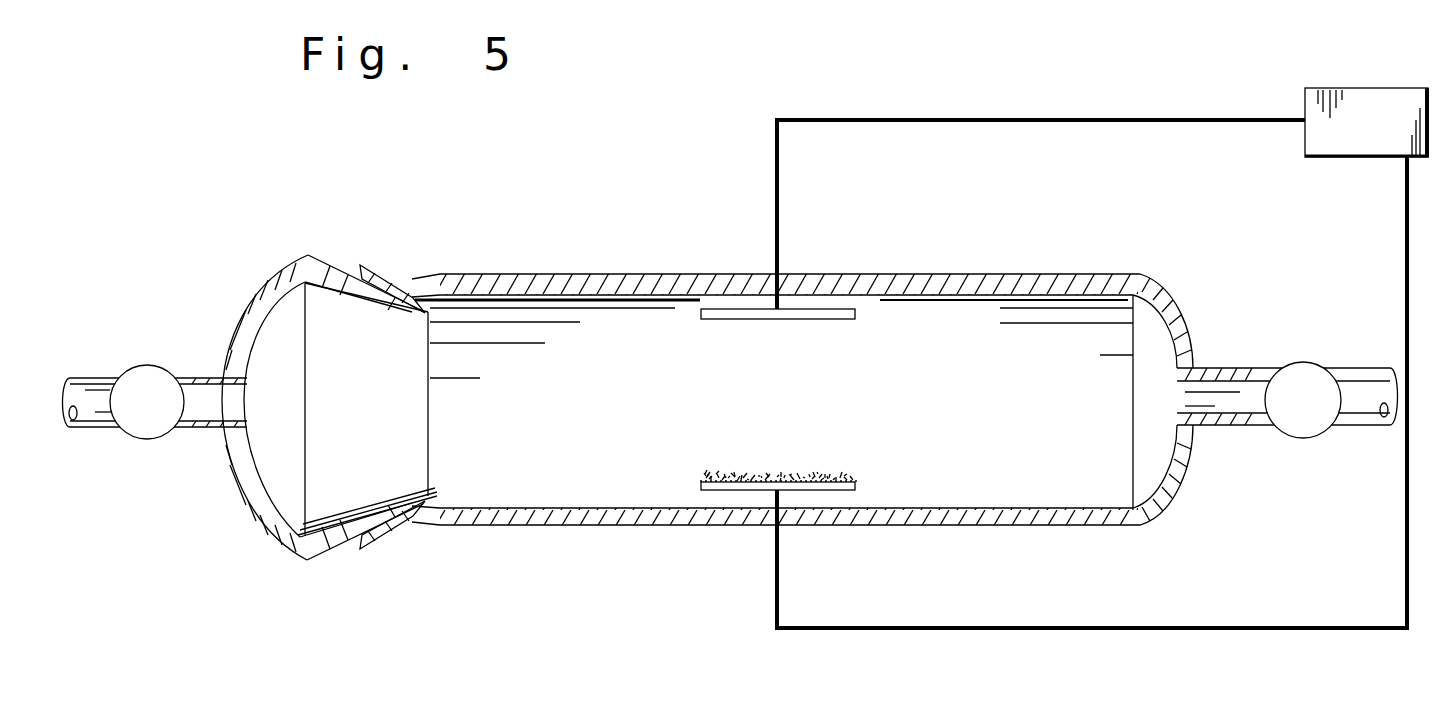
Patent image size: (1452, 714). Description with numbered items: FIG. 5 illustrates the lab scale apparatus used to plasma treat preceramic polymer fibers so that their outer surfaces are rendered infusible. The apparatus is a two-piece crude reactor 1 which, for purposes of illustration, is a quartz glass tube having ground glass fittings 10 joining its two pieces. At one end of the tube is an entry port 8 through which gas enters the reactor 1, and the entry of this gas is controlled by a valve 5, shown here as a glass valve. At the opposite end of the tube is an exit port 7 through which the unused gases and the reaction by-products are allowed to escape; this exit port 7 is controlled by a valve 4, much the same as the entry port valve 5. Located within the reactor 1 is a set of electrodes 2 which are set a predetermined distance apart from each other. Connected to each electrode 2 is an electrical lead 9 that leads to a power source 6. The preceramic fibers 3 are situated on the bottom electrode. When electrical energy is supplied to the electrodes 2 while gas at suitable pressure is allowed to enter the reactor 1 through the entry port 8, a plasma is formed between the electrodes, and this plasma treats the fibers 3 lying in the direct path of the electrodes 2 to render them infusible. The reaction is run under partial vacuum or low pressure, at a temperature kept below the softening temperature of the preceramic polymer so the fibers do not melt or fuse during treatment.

The reactor 1 is at (598, 525).
The electrodes 2 is at (731, 312).
The preceramic fibers 3 is at (840, 468).
The valve 4 is at (1297, 363).
The valve 5 is at (160, 367).
The power source 6 is at (1351, 88).
The exit port 7 is at (1222, 428).
The entry port 8 is at (201, 428).
The electrical lead 9 is at (1050, 120).
The ground glass fittings 10 is at (376, 252).